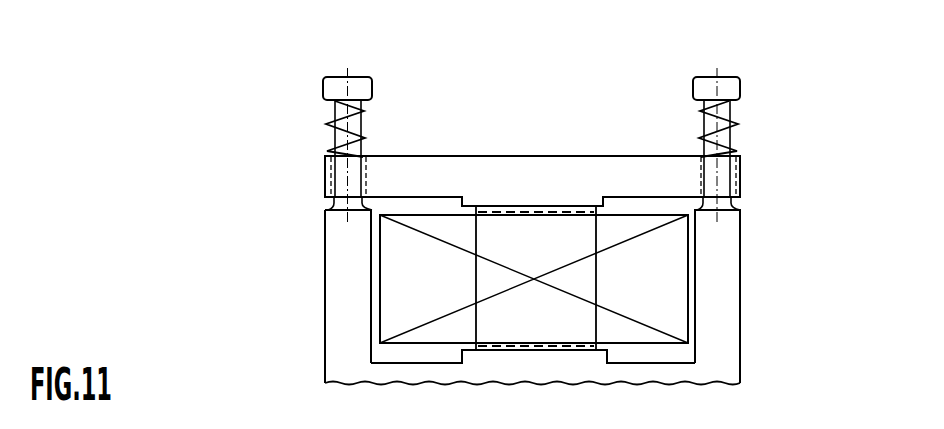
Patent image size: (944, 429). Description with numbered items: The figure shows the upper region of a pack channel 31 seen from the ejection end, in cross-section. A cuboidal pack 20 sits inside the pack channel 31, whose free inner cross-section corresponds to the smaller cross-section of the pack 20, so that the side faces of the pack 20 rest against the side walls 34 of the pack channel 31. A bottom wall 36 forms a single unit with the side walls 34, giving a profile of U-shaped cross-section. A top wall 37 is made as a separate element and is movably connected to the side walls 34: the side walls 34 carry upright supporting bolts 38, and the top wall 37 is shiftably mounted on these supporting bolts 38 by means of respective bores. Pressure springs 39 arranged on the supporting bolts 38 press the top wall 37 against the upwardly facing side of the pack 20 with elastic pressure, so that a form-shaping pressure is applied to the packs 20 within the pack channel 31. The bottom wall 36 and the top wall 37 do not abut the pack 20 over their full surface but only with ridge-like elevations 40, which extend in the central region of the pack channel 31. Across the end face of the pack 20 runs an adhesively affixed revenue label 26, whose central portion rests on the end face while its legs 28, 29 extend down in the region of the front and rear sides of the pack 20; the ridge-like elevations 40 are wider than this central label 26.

The pack 20 is at (672, 258).
The label 26 is at (557, 240).
The leg 28 is at (478, 205).
The leg 29 is at (510, 352).
The pack channel 31 is at (272, 251).
The side walls 34 is at (325, 290).
The bottom wall 36 is at (665, 373).
The top wall 37 is at (497, 175).
The supporting bolts 38 is at (332, 127).
The pressure springs 39 is at (367, 104).
The ridge-like elevations 40 is at (603, 196).